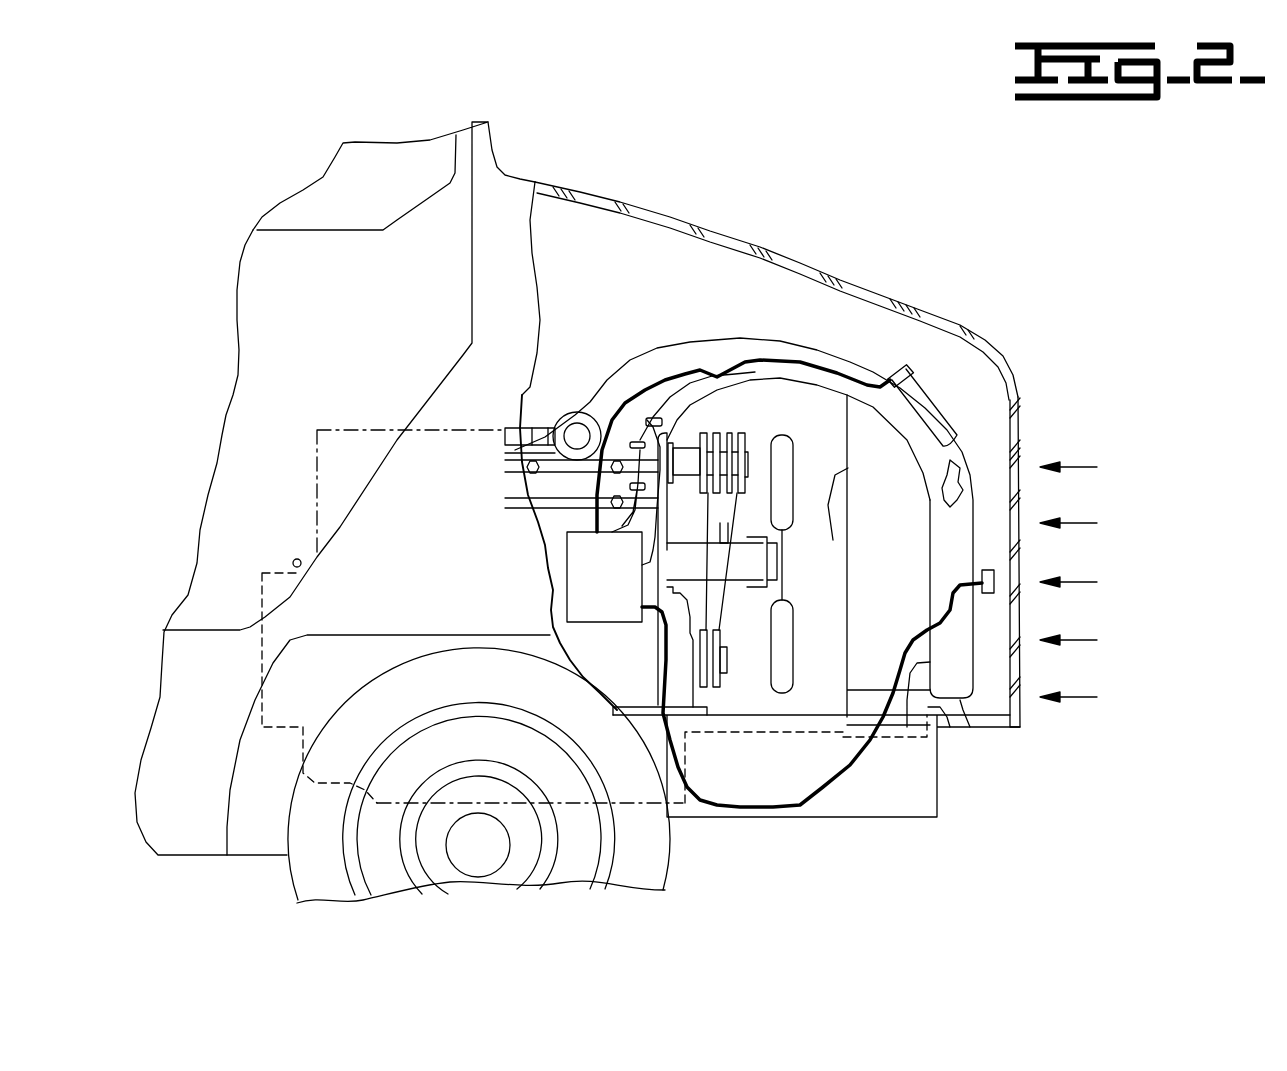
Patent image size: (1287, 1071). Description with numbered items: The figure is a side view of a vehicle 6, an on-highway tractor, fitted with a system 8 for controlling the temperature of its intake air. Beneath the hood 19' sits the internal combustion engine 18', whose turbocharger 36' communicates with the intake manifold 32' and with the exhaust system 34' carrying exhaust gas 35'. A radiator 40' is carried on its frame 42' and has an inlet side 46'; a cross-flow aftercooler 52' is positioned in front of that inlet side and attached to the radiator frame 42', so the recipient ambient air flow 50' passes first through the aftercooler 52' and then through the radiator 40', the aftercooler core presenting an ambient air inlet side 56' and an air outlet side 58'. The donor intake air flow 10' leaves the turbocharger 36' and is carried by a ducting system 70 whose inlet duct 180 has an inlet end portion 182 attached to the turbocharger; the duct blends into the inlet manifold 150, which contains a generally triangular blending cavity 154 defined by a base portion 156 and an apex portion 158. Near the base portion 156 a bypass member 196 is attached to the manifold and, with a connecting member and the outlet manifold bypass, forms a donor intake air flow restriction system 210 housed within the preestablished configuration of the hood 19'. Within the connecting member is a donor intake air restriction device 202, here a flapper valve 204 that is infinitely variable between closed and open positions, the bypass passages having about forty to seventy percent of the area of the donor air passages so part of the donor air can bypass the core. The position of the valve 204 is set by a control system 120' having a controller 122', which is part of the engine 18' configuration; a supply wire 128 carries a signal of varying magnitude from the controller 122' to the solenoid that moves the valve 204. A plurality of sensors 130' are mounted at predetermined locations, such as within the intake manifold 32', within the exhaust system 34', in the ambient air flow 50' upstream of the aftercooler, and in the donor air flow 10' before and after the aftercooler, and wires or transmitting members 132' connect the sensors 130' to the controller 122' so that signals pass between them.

The vehicle 6 is at (745, 100).
The system for controlling the temperature of an intake air flow 8 is at (790, 160).
The donor intake air flow restriction system 210 is at (822, 196).
The control system 120' is at (1074, 164).
The hood 19' is at (776, 268).
The ducting system 70 is at (715, 340).
The supply line or wire 128 is at (767, 357).
The inlet duct 180 is at (840, 360).
The inlet end portion 182 is at (900, 363).
The flapper valve 204 is at (908, 312).
The donor intake air restriction device 202 is at (915, 306).
The bypass member 196 is at (917, 407).
The aftercooler 52' is at (1003, 407).
The base portion 156 is at (953, 440).
The blending cavity 154 is at (950, 485).
The recipient ambient air flow 50' is at (1087, 562).
The sensors 130' is at (820, 547).
The inlet manifold 150 is at (973, 613).
The inlet side of the radiator 46' is at (1051, 632).
The recipient air inlet side 56' is at (1074, 667).
The apex portion 158 is at (952, 705).
The frame of the radiator 42' is at (866, 739).
The air outlet side 58' is at (1014, 776).
The donor intake air flow 10' is at (531, 335).
The turbocharger 36' is at (491, 399).
The intake manifold 32' is at (325, 409).
The exhaust system 34' is at (540, 463).
The exhaust gas 35' is at (517, 517).
The wires or transmitting member 132' is at (543, 573).
The radiator 40' is at (809, 564).
The controller 122' is at (604, 577).
The internal combustion engine 18' is at (688, 563).